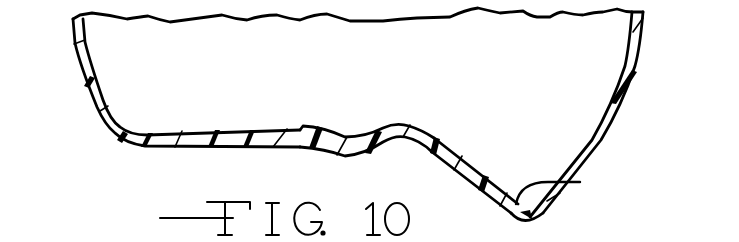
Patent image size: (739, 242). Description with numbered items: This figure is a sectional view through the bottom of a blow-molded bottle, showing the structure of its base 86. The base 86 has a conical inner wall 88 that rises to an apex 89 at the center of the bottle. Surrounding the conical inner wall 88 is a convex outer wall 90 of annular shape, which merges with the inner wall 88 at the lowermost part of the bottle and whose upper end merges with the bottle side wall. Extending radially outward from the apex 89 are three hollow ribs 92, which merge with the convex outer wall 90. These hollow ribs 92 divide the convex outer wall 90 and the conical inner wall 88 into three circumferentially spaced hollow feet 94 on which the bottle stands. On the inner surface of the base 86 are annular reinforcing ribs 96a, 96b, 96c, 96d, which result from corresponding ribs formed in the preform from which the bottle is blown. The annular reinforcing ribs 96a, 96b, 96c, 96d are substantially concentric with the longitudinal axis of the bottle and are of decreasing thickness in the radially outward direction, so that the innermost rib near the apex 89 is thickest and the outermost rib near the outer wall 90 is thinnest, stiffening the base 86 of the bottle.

The base 86 is at (610, 142).
The conical inner wall 88 is at (447, 173).
The apex 89 is at (335, 153).
The convex outer wall 90 is at (613, 121).
The hollow ribs 92 is at (153, 148).
The hollow feet 94 is at (553, 205).
The annular reinforcing rib 96a is at (580, 182).
The annular reinforcing rib 96b is at (477, 172).
The annular reinforcing rib 96c is at (445, 146).
The annular reinforcing rib 96d is at (407, 126).